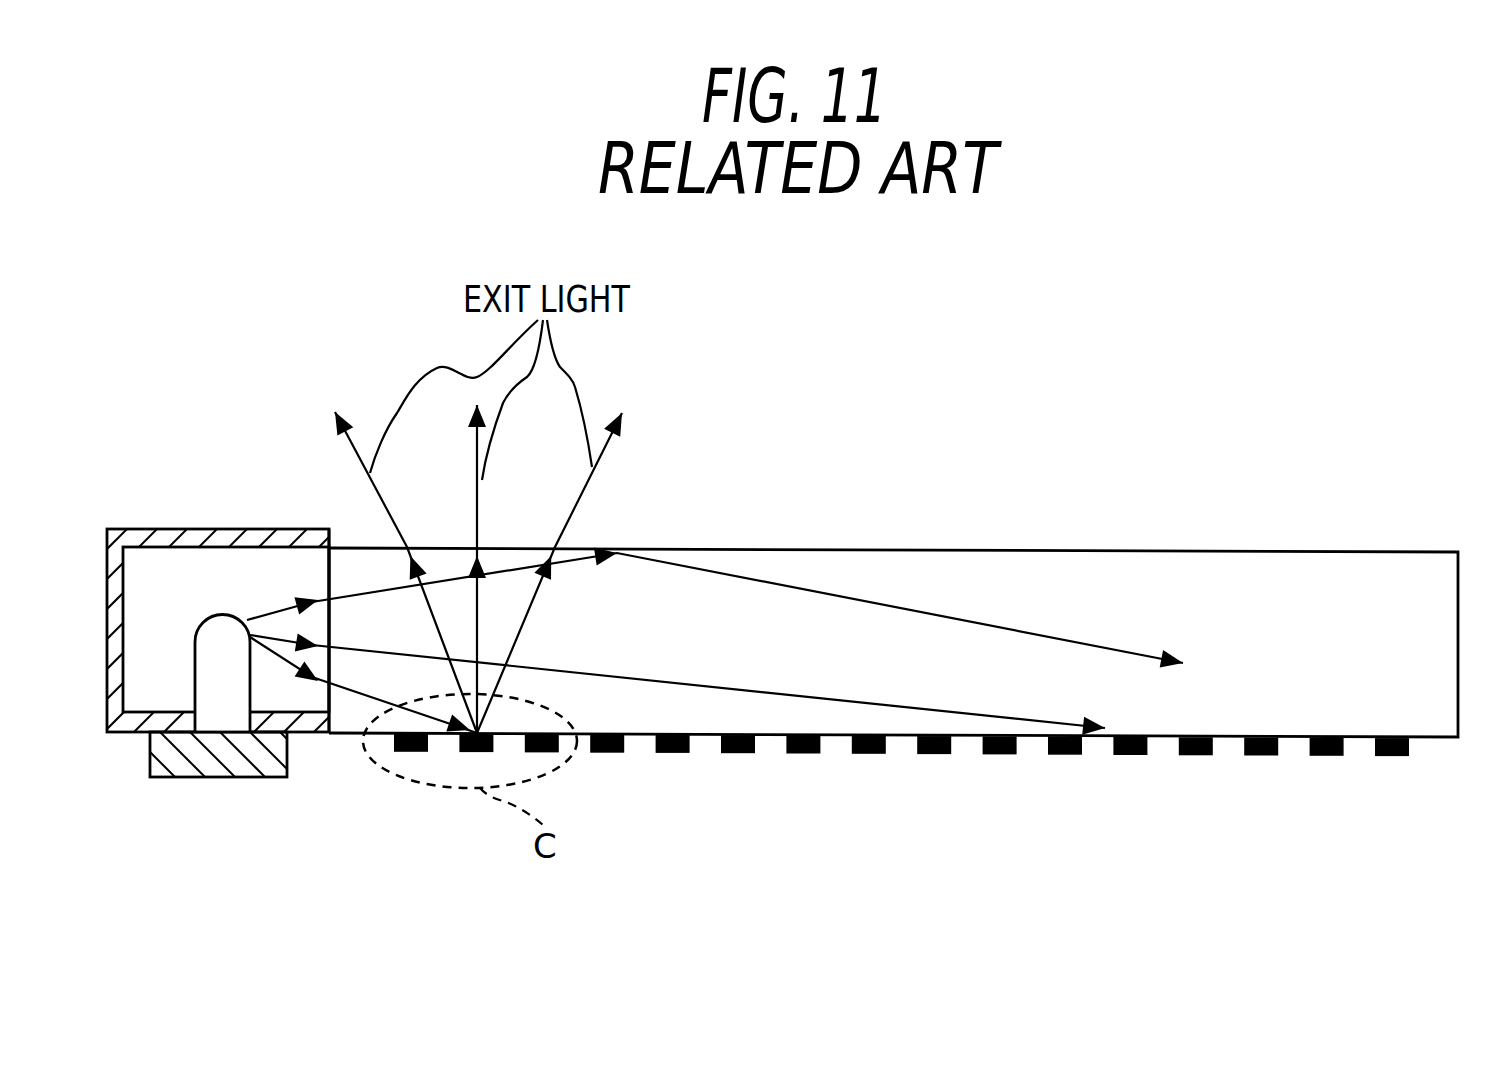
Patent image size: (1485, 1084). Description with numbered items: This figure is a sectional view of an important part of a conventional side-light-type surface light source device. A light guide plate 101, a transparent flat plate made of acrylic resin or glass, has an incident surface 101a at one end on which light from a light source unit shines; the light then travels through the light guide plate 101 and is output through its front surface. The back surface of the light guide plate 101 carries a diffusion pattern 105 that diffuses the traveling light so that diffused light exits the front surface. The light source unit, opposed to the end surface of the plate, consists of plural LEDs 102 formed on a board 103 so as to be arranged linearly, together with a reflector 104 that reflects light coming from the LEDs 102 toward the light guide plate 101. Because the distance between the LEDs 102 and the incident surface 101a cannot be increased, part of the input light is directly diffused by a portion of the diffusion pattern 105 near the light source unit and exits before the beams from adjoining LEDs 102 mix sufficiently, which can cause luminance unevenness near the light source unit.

The light guide plate 101 is at (1283, 552).
The incident surface 101a is at (327, 558).
The LEDs 102 is at (203, 622).
The board 103 is at (208, 777).
The reflector 104 is at (223, 533).
The diffusion pattern 105 is at (870, 755).